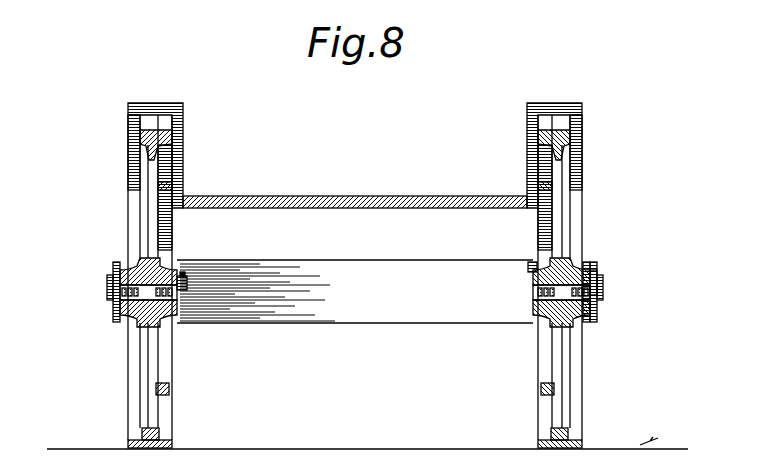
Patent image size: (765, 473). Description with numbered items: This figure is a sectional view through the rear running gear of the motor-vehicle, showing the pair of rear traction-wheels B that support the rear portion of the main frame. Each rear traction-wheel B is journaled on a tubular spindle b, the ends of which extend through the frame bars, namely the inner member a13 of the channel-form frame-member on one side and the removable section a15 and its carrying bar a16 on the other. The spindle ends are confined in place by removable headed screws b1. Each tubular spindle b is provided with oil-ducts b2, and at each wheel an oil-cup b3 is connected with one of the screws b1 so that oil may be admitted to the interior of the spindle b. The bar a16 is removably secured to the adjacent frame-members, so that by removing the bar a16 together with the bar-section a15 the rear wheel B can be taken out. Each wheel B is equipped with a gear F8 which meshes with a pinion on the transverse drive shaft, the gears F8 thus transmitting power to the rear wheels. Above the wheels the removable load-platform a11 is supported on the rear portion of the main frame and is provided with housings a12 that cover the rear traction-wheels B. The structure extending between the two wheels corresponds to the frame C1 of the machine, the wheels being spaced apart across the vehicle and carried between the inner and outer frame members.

The rear traction-wheels B is at (128, 180).
The tubular spindles b is at (125, 325).
The removable headed screws b1 is at (619, 320).
The oil-ducts b2 is at (640, 172).
The oil-cup b3 is at (190, 282).
The removable load-platform a11 is at (357, 186).
The housings a12 is at (184, 152).
The inner member a13 is at (530, 263).
The removable section a15 is at (586, 265).
The bar a16 is at (593, 266).
The front traction-wheel frame C1 is at (325, 318).
The gears F8 is at (170, 390).